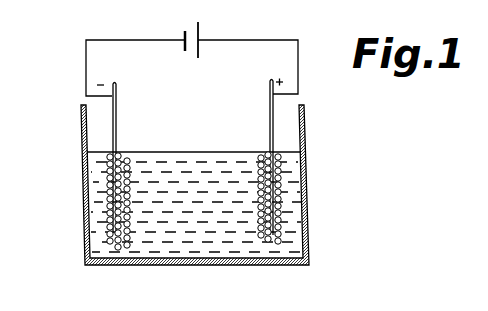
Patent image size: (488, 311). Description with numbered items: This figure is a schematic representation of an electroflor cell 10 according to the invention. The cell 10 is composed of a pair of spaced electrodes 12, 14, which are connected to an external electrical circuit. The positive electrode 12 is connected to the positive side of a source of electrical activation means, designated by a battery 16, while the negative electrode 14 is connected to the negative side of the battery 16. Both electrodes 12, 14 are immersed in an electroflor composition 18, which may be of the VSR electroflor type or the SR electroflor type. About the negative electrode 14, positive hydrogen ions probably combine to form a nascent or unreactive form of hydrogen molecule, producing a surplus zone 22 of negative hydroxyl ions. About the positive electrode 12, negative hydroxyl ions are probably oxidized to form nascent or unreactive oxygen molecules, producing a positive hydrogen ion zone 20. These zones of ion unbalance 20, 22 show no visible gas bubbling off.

The electroflor cell 10 is at (77, 178).
The positive electrode 12 is at (275, 140).
The negative electrode 14 is at (114, 130).
The battery 16 is at (199, 35).
The electroflor composition 18 is at (187, 243).
The zone of ion unbalance 20 is at (283, 208).
The zone of ion unbalance 22 is at (106, 218).